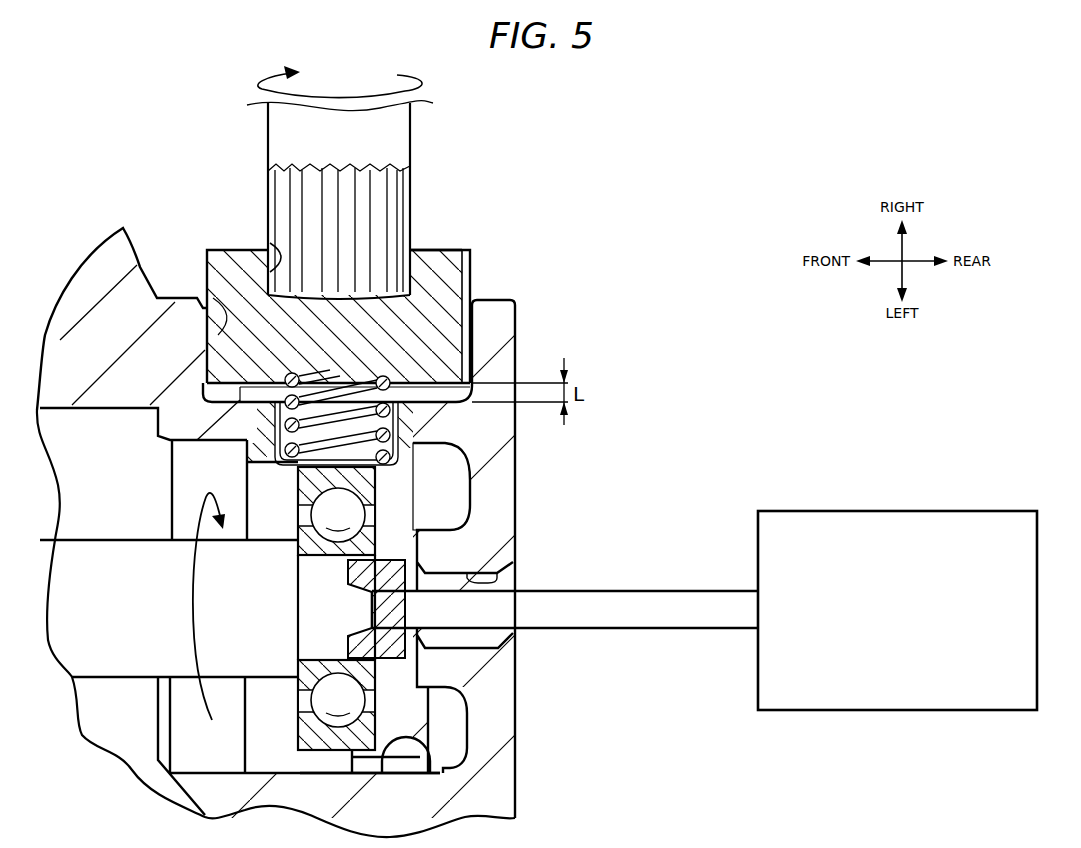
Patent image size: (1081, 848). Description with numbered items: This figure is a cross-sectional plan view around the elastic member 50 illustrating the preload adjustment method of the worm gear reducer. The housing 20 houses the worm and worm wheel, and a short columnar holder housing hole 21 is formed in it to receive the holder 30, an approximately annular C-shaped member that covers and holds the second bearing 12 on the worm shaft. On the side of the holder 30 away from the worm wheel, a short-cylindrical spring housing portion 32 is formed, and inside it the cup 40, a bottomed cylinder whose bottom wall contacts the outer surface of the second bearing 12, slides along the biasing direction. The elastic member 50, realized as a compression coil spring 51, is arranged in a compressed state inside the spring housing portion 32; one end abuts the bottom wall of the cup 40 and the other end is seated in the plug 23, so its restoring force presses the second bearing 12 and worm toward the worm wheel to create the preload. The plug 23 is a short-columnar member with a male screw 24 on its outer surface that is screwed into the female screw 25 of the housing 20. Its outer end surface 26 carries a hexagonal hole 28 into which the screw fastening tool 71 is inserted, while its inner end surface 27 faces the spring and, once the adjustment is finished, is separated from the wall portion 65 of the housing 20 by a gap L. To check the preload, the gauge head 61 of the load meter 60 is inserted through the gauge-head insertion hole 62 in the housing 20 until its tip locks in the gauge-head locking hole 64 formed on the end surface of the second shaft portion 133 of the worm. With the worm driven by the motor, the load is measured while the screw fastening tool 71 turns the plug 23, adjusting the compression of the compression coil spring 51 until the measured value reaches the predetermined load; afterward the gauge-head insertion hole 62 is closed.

The second bearing 12 is at (395, 540).
The housing 20 is at (483, 740).
The holder housing hole 21 is at (430, 750).
The plug 23 is at (345, 282).
The male screw 24 is at (470, 268).
The female screw 25 is at (233, 310).
The outer end surface 26 is at (432, 250).
The inner end surface 27 is at (243, 390).
The hexagonal hole 28 is at (272, 252).
The holder 30 is at (478, 571).
The spring housing portion 32 is at (400, 435).
The cup 40 is at (386, 488).
The elastic member 50 is at (447, 393).
The compression coil spring 51 is at (378, 360).
The load meter 60 is at (989, 512).
The gauge head 61 is at (670, 603).
The gauge-head insertion hole 62 is at (500, 577).
The gauge-head locking hole 64 is at (432, 642).
The wall portion 65 is at (425, 413).
The screw fastening tool 71 is at (402, 169).
The second shaft portion 133 is at (450, 713).